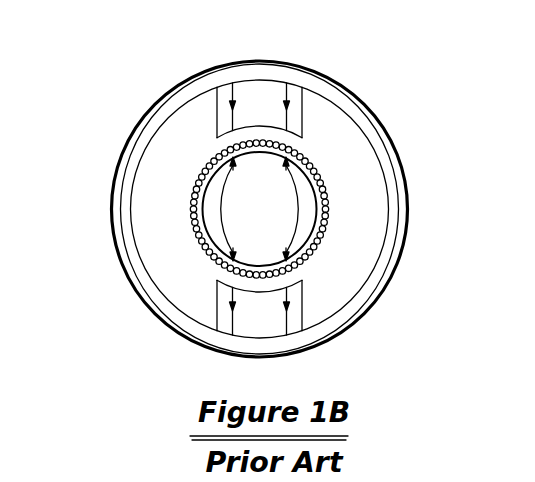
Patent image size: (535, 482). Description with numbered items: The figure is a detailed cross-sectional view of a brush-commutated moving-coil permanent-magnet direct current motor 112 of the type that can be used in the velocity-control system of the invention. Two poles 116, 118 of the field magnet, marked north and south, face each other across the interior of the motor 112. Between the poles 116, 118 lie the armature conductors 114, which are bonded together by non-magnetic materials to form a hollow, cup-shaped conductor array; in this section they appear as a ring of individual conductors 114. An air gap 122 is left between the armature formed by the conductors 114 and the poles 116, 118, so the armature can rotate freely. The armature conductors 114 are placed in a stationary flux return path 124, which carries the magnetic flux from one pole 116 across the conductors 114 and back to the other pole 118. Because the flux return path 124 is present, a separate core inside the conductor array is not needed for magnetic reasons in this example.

The moving-coil permanent-magnet D.C. motor 112 is at (113, 96).
The conductors 114 is at (320, 147).
The pole 116 is at (258, 85).
The pole 118 is at (270, 326).
The air gap 122 is at (215, 145).
The stationary flux return path 124 is at (316, 197).